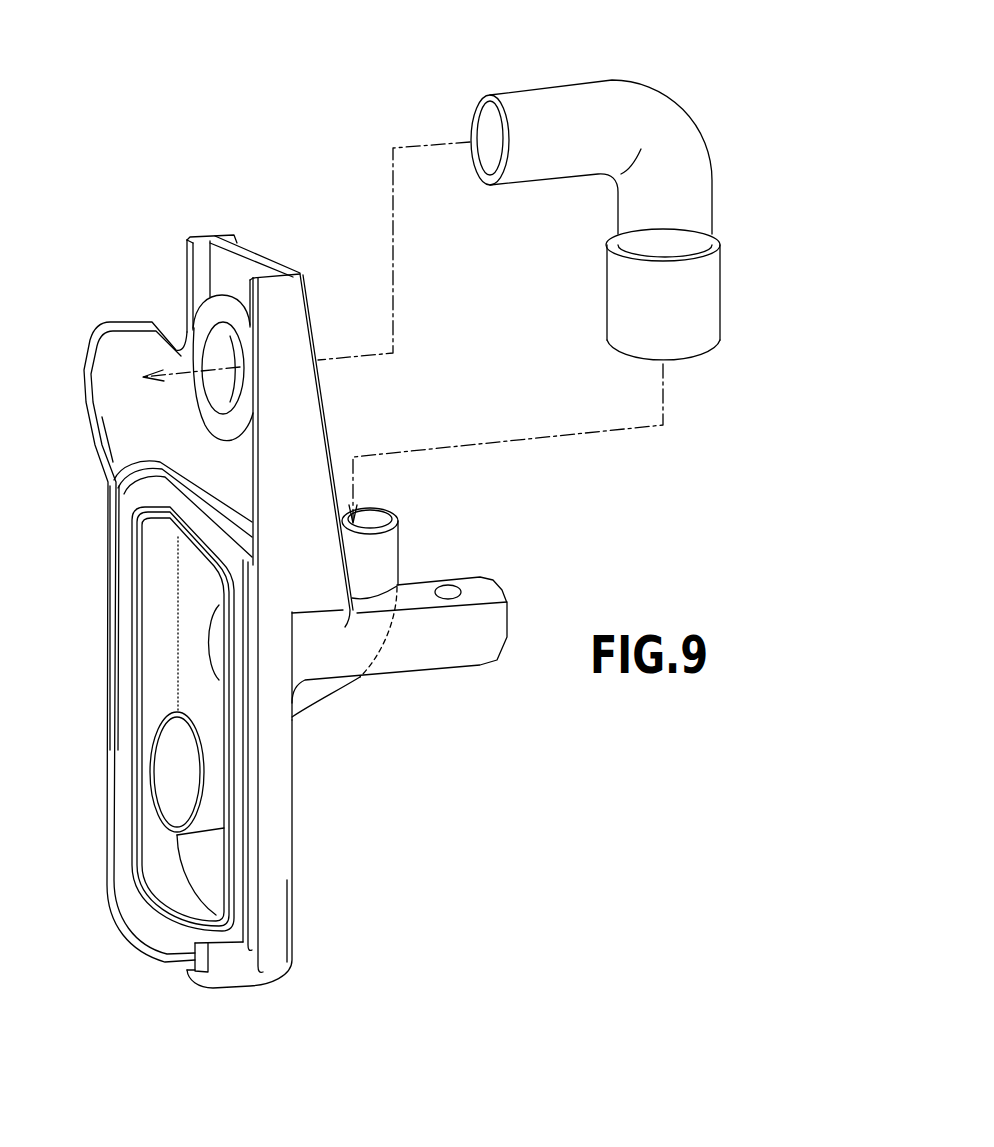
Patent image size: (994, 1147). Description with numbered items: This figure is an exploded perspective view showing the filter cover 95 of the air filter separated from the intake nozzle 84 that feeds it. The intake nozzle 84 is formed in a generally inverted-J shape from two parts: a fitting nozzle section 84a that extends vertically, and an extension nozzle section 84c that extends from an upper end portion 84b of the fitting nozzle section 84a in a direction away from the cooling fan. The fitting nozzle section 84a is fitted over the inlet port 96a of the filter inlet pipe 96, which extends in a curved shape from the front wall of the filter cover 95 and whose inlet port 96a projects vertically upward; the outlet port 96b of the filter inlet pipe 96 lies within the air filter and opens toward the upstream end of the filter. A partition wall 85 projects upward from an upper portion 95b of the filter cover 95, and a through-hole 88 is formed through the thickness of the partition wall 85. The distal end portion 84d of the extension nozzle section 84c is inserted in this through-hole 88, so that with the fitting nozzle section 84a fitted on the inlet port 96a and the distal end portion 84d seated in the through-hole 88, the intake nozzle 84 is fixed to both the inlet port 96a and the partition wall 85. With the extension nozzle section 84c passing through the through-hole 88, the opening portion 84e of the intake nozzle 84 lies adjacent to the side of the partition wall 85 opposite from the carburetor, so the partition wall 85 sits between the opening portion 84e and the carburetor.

The intake nozzle 84 is at (697, 116).
The fitting nozzle section 84a is at (712, 302).
The upper end portion 84b is at (717, 253).
The extension nozzle section 84c is at (608, 92).
The distal end portion 84d is at (522, 97).
The opening portion 84e is at (483, 152).
The partition wall 85 is at (225, 275).
The through-hole 88 is at (223, 399).
The filter cover 95 is at (275, 810).
The upper portion 95b is at (185, 475).
The filter inlet pipe 96 is at (320, 700).
The inlet port 96a is at (390, 560).
The outlet port 96b is at (213, 643).